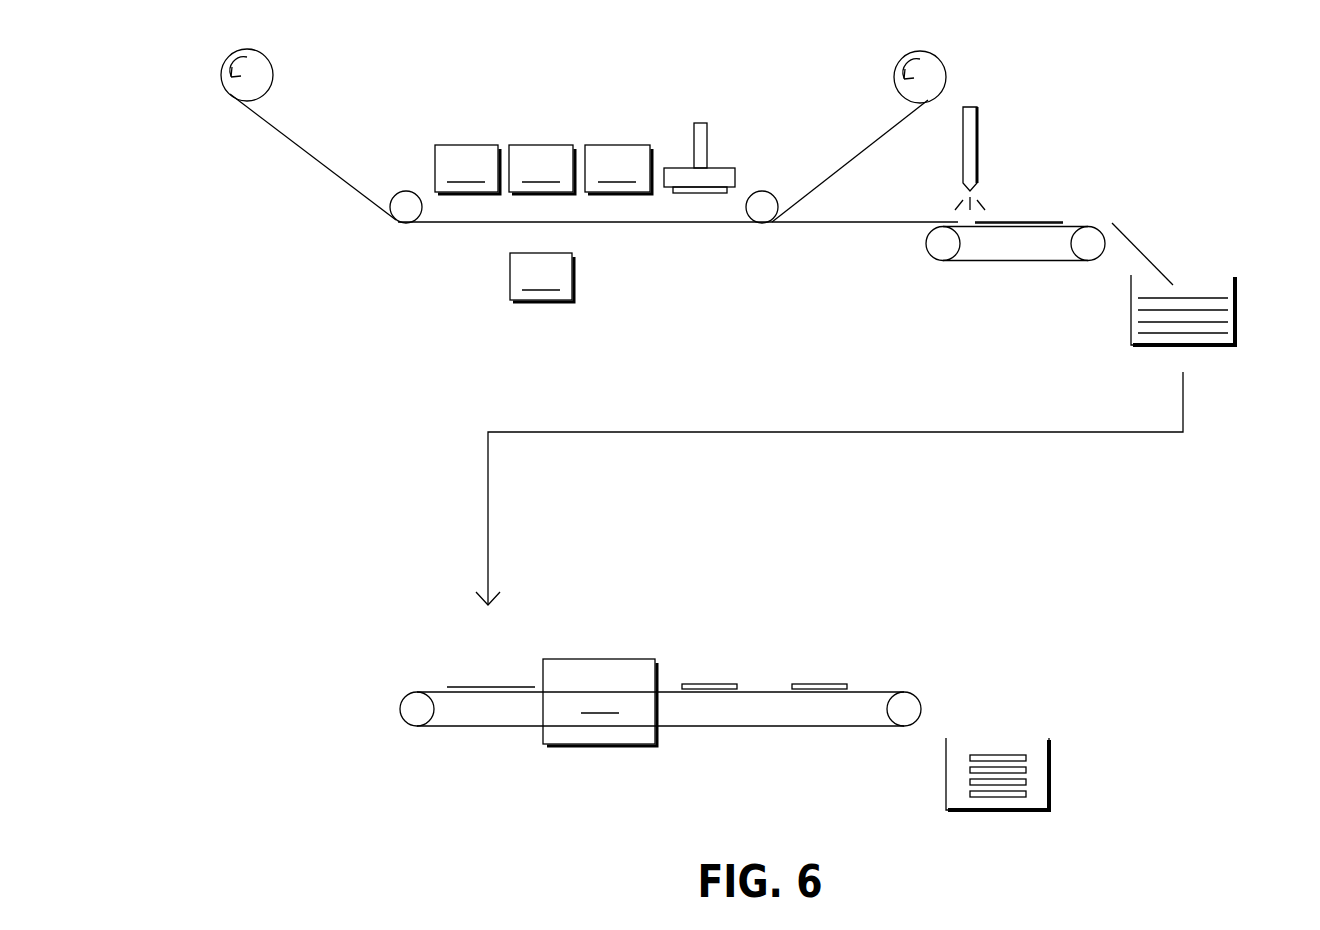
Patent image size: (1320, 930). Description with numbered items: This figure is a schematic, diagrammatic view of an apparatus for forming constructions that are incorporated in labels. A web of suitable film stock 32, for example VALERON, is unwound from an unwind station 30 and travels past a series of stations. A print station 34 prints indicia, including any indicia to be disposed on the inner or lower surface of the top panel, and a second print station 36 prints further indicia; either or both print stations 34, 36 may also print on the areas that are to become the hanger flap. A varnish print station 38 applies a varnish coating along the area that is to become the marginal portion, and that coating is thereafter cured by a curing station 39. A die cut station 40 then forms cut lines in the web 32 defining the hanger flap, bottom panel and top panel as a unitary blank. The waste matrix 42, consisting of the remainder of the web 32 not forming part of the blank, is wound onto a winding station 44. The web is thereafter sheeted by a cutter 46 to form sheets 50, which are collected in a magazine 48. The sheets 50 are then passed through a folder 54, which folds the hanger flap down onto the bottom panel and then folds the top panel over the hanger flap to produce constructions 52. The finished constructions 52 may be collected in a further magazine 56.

The unwind station 30 is at (265, 63).
The web of film stock 32 is at (313, 153).
The print station 34 is at (467, 169).
The print station 36 is at (542, 277).
The varnish print station 38 is at (542, 169).
The curing station 39 is at (618, 169).
The die cut station 40 is at (680, 167).
The waste matrix 42 is at (872, 142).
The winding station 44 is at (932, 63).
The cutter 46 is at (973, 135).
The magazine 48 is at (1235, 329).
The sheets 50 is at (1025, 223).
The constructions 52 is at (712, 683).
The folder 54 is at (600, 702).
The magazine 56 is at (1049, 790).